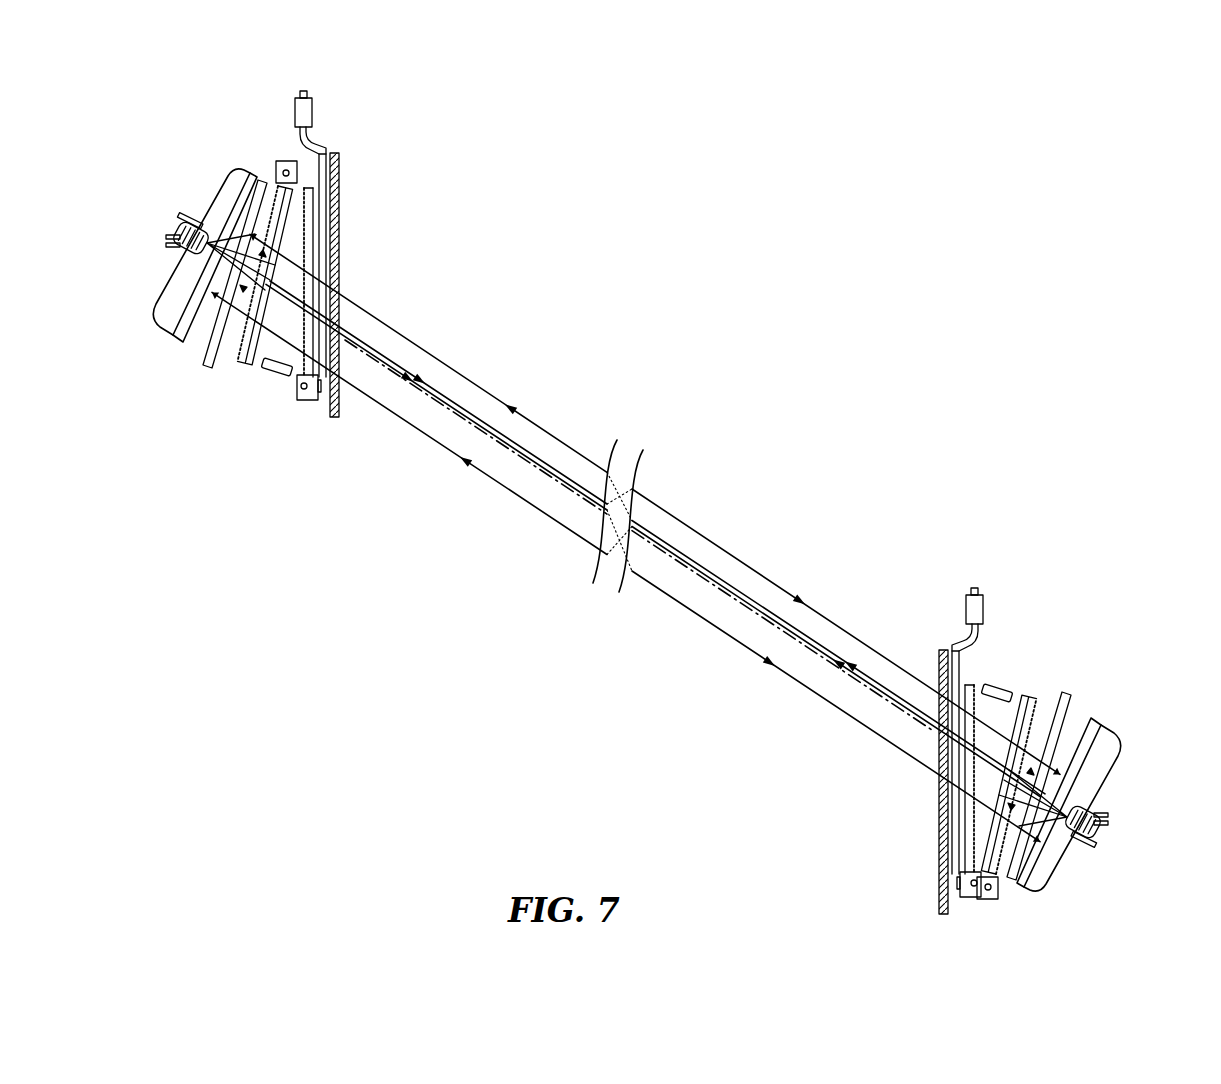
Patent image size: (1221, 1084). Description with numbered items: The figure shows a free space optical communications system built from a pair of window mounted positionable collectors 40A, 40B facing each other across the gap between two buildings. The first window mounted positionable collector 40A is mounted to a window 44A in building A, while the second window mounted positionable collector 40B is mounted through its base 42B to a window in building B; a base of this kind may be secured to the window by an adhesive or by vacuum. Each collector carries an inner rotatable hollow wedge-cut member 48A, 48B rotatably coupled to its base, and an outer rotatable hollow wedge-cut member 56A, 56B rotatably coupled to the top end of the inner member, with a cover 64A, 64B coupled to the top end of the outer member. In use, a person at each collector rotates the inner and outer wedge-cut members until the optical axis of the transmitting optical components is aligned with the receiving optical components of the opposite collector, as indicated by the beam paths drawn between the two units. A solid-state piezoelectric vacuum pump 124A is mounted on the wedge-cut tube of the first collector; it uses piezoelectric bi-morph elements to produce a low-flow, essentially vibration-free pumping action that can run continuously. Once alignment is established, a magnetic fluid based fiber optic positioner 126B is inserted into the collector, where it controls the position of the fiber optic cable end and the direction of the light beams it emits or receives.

The window mounted positionable collector 40A is at (200, 460).
The window mounted positionable collector 40B is at (1065, 605).
The base 42B is at (940, 650).
The window 44A is at (338, 153).
The inner rotatable hollow wedge-cut member 48A is at (257, 357).
The inner rotatable hollow wedge-cut member 48B is at (1008, 703).
The outer rotatable hollow wedge-cut member 56A is at (210, 330).
The outer rotatable hollow wedge-cut member 56B is at (1060, 730).
The cover 64A is at (222, 200).
The cover 64B is at (1112, 770).
The solid-state piezoelectric vacuum pump 124A is at (176, 238).
The magnetic fluid based fiber optic positioner 126B is at (1098, 838).